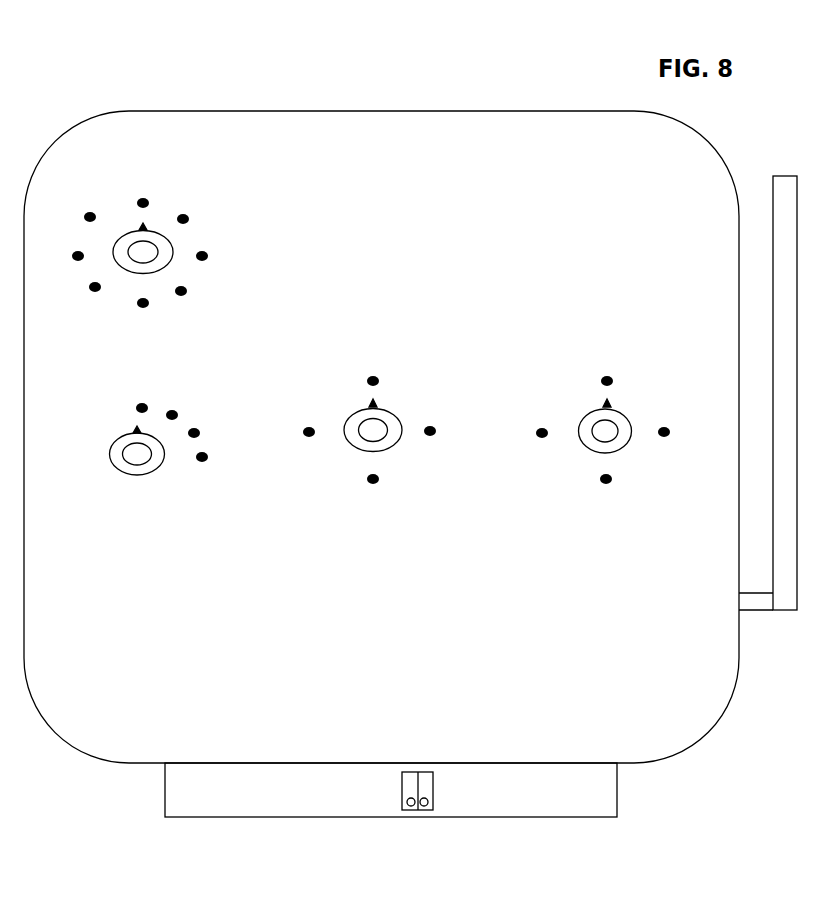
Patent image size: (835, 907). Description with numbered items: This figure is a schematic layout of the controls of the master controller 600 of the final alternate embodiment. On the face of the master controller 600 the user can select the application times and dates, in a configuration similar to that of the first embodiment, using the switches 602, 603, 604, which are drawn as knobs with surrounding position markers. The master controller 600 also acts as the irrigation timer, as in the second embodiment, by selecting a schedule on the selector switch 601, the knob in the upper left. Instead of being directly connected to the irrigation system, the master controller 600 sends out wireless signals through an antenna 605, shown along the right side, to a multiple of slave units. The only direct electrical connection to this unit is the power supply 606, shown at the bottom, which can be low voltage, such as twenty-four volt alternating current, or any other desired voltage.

The master controller 600 is at (83, 122).
The selector switch 601 is at (128, 231).
The switch 602 is at (128, 432).
The switch 603 is at (355, 410).
The switch 604 is at (590, 410).
The antenna 605 is at (785, 175).
The power supply 606 is at (423, 811).